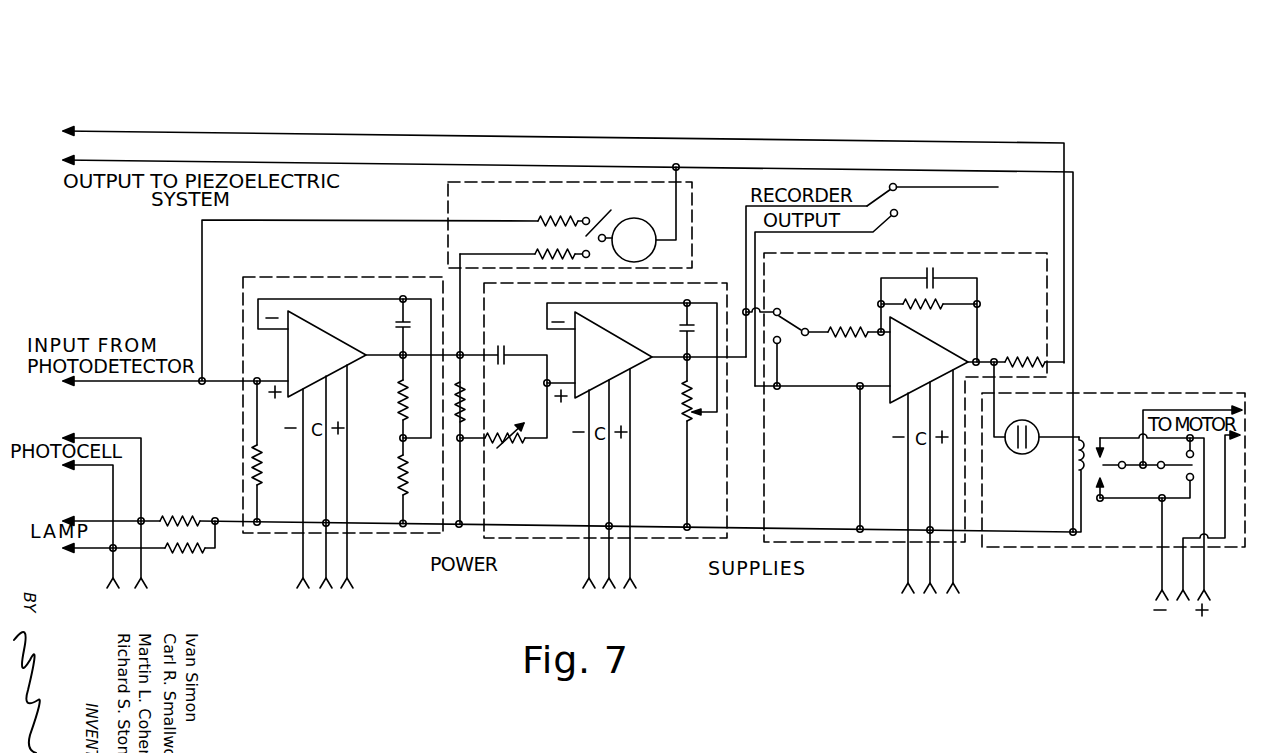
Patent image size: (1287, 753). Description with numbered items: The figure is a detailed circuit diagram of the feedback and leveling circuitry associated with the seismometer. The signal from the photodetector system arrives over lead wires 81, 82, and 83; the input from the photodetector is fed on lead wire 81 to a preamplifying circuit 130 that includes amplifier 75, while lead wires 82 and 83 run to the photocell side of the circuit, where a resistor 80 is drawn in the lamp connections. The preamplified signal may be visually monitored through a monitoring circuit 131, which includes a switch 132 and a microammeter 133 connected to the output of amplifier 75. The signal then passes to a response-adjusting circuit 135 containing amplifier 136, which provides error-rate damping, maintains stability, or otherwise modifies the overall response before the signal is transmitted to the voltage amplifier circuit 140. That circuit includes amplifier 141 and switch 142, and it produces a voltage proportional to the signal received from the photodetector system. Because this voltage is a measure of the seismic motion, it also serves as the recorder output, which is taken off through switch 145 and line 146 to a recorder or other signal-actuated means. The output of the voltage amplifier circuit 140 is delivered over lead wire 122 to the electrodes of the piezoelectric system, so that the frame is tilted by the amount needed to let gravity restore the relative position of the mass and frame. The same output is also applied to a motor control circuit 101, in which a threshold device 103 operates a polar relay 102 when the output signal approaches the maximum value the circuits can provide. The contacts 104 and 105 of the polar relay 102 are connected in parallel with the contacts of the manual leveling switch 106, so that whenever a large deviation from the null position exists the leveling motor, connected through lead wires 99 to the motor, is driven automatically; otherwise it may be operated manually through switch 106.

The lead wire 122 is at (104, 131).
The monitoring circuit 131 is at (483, 195).
The switch 132 is at (597, 222).
The microammeter 133 is at (636, 236).
The amplifier 75 is at (312, 340).
The amplifier 136 is at (602, 343).
The amplifier 141 is at (910, 345).
The switch 142 is at (789, 315).
The switch 145 is at (890, 202).
The line 146 is at (968, 189).
The lead wire 81 is at (300, 318).
The lead wire 82 is at (143, 455).
The lead wire 83 is at (113, 493).
The lamp resistor 80 is at (157, 552).
The preamplifying circuit 130 is at (375, 541).
The response-adjusting circuit 135 is at (605, 434).
The voltage amplifier circuit 140 is at (838, 528).
The motor control circuit 101 is at (1041, 522).
The threshold device 103 is at (1018, 425).
The contact 104 is at (1100, 437).
The polar relay 102 is at (1110, 456).
The contact 105 is at (1098, 503).
The manual leveling switch 106 is at (1178, 455).
The lead wires 99 is at (1217, 403).